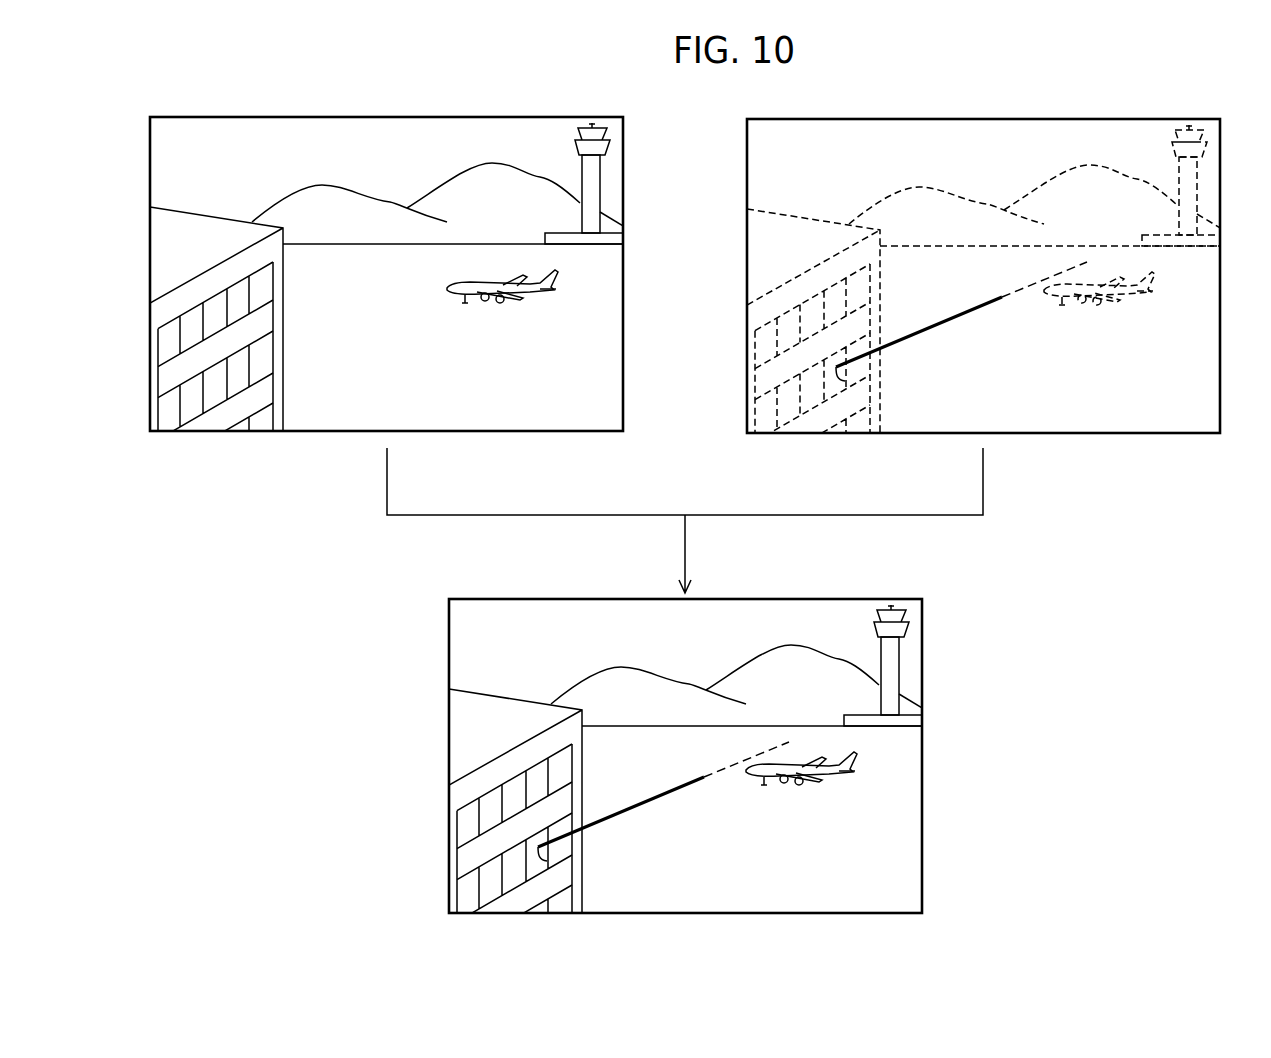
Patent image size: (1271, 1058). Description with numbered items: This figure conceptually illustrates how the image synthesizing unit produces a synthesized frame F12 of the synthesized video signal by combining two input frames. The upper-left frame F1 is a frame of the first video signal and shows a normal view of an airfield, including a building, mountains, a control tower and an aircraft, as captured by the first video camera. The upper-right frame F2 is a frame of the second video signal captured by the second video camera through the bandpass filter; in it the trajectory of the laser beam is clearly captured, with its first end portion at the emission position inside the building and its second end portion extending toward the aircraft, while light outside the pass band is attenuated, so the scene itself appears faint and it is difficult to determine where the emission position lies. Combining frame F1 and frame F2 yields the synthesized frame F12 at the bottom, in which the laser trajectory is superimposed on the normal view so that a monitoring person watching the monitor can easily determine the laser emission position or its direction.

The frame F1 is at (463, 117).
The frame F2 is at (1061, 120).
The synthesized frame F12 is at (763, 600).